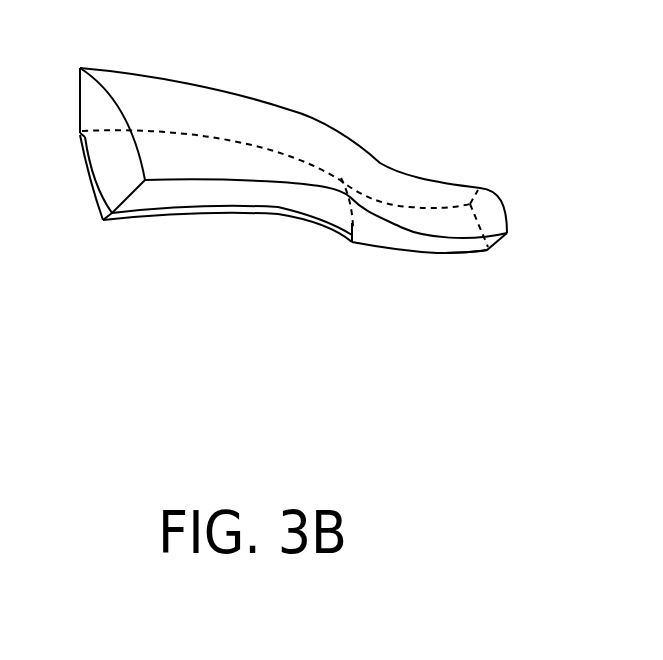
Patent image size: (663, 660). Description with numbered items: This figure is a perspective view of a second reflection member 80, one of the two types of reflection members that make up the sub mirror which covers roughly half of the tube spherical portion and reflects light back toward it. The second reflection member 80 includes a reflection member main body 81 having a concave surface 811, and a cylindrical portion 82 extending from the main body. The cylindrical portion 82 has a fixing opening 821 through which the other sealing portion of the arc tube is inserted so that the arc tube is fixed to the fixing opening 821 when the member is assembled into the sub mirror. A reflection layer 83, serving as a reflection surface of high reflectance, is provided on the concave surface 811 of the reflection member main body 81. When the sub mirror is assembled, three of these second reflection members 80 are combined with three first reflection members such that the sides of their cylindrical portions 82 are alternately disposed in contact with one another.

The second reflection member 80 is at (503, 357).
The reflection member main body 81 is at (245, 167).
The concave surface 811 is at (167, 207).
The cylindrical portion 82 is at (398, 215).
The fixing opening 821 is at (460, 252).
The reflection layer 83 is at (97, 182).